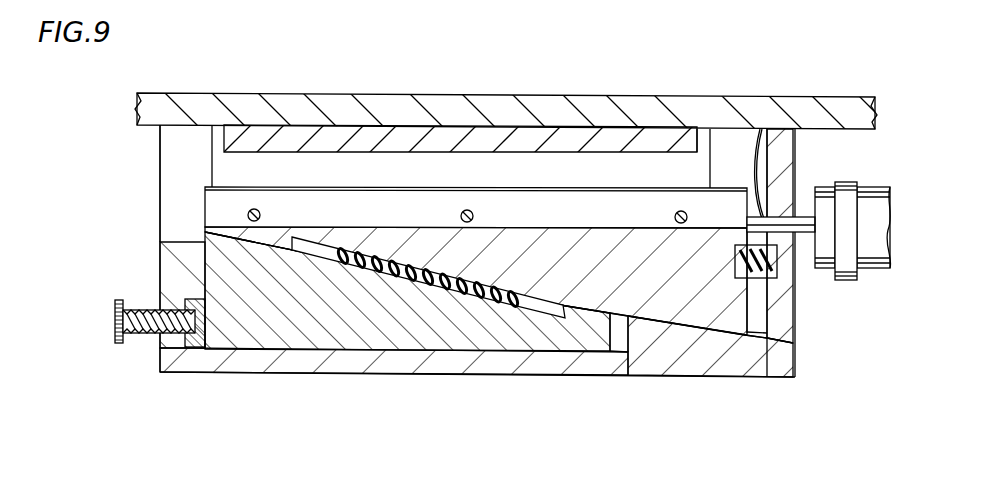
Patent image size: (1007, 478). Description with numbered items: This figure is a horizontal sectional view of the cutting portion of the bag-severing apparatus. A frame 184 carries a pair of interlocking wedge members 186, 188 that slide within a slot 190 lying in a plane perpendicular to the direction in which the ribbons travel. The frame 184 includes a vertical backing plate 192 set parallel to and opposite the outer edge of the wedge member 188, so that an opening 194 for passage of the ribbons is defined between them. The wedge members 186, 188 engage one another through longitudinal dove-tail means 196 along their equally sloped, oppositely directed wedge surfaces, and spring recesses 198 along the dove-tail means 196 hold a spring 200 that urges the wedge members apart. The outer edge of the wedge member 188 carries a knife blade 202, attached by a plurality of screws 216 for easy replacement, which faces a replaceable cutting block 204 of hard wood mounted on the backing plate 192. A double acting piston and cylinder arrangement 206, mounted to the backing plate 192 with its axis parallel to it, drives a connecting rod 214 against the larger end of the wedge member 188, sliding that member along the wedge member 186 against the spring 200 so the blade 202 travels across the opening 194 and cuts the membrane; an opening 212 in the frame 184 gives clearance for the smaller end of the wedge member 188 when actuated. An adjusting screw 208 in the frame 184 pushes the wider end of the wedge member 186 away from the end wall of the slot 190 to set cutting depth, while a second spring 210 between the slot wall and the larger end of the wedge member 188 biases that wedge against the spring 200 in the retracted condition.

The frame 184 is at (160, 276).
The wedge member 186 is at (215, 262).
The wedge member 188 is at (222, 234).
The slot 190 is at (208, 290).
The backing plate 192 is at (402, 104).
The opening 194 is at (683, 165).
The dove-tail means 196 is at (606, 303).
The spring recesses 198 is at (524, 275).
The spring 200 is at (378, 243).
The knife blade 202 is at (572, 187).
The cutting block 204 is at (262, 135).
The double acting piston and cylinder arrangement 206 is at (845, 182).
The adjusting screw 208 is at (113, 334).
The second spring 210 is at (770, 262).
The opening 212 is at (178, 170).
The connecting rod 214 is at (759, 128).
The screws 216 is at (256, 210).